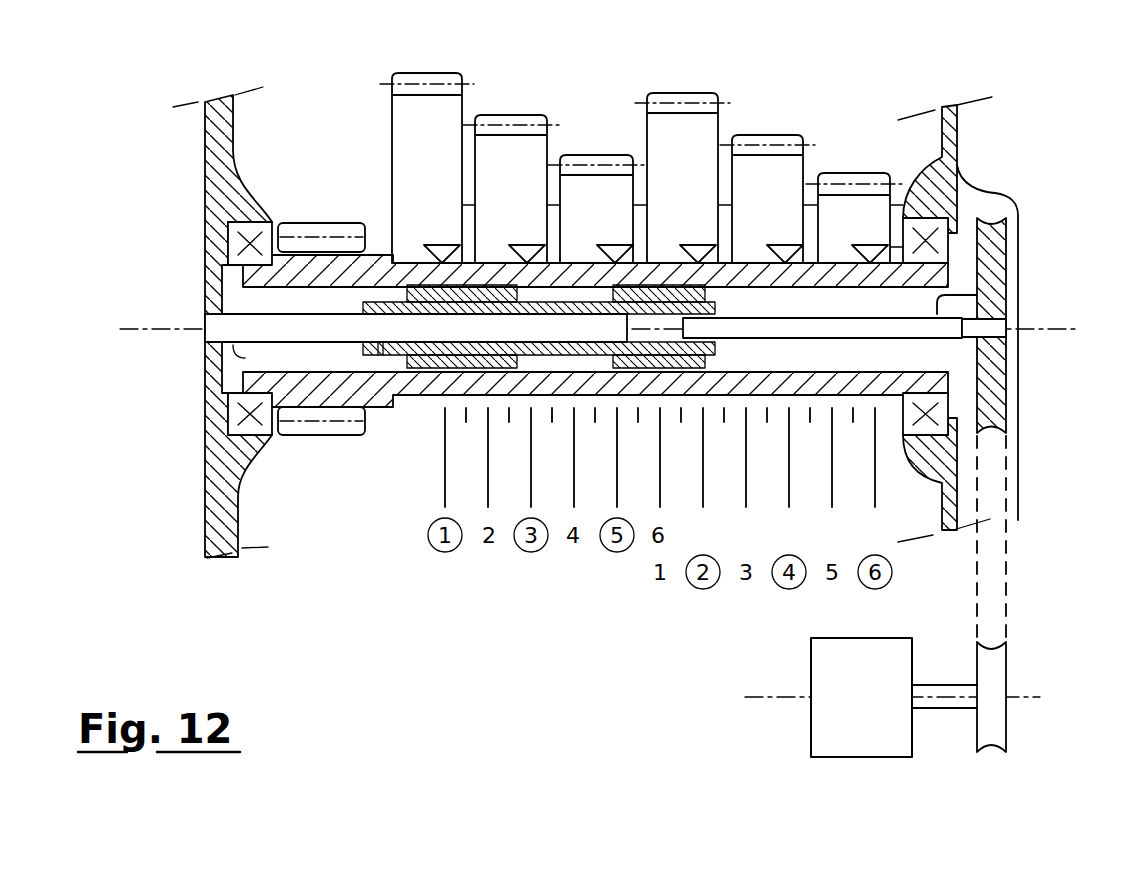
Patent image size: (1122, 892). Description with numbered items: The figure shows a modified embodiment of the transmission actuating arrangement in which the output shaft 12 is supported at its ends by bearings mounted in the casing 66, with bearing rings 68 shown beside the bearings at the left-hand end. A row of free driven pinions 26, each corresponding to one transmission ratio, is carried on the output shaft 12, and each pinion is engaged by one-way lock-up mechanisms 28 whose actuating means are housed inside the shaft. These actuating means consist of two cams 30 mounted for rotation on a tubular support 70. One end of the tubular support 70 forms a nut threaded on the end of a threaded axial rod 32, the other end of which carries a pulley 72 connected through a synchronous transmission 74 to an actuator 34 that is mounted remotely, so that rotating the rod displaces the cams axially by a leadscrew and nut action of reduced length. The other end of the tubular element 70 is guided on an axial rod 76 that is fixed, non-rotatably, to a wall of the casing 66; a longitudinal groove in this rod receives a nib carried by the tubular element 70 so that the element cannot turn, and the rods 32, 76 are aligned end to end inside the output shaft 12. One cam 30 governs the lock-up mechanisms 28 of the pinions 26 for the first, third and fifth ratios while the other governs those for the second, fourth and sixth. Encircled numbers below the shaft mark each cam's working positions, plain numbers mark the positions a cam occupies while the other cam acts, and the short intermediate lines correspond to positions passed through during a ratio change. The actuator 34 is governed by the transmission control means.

The output shaft 12 is at (410, 410).
The driven pinion 26 is at (422, 73).
The one-way lock-up mechanism 28 is at (446, 242).
The cam 30 is at (407, 293).
The threaded axial rod 32 is at (937, 295).
The actuator 34 is at (850, 735).
The casing 66 is at (225, 200).
The bearing ring 68 is at (342, 221).
The tubular support 70 is at (507, 282).
The pulley 72 is at (1000, 365).
The synchronous transmission 74 is at (1010, 603).
The axial rod 76 is at (217, 360).